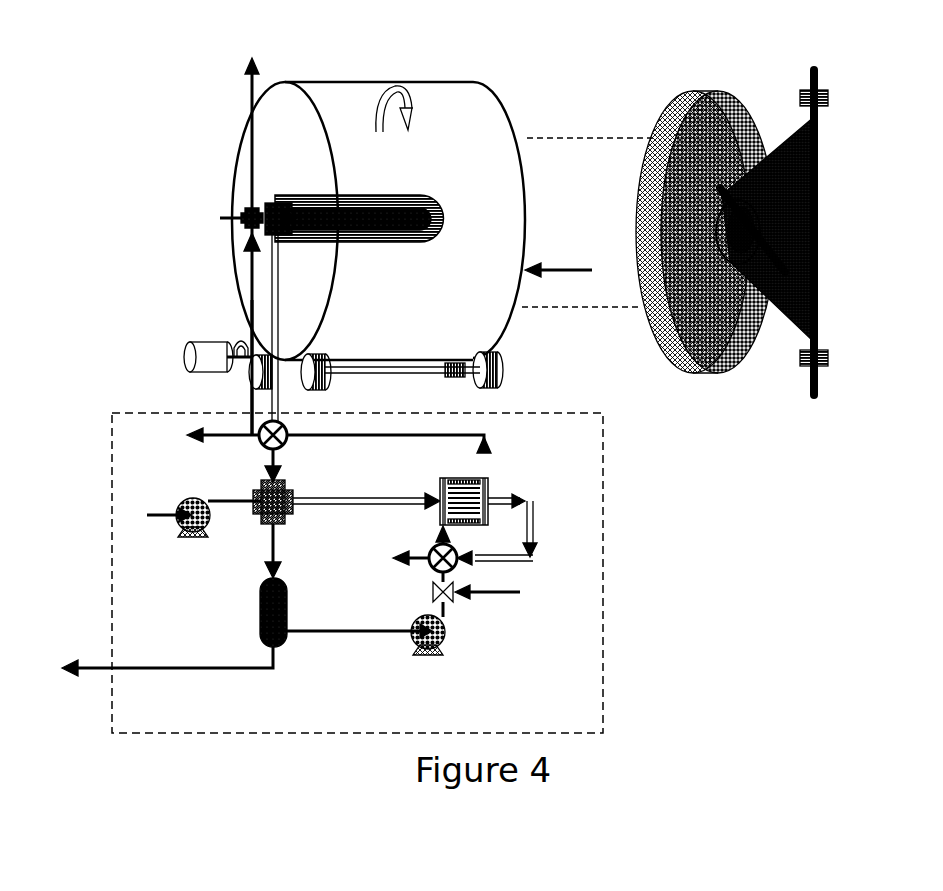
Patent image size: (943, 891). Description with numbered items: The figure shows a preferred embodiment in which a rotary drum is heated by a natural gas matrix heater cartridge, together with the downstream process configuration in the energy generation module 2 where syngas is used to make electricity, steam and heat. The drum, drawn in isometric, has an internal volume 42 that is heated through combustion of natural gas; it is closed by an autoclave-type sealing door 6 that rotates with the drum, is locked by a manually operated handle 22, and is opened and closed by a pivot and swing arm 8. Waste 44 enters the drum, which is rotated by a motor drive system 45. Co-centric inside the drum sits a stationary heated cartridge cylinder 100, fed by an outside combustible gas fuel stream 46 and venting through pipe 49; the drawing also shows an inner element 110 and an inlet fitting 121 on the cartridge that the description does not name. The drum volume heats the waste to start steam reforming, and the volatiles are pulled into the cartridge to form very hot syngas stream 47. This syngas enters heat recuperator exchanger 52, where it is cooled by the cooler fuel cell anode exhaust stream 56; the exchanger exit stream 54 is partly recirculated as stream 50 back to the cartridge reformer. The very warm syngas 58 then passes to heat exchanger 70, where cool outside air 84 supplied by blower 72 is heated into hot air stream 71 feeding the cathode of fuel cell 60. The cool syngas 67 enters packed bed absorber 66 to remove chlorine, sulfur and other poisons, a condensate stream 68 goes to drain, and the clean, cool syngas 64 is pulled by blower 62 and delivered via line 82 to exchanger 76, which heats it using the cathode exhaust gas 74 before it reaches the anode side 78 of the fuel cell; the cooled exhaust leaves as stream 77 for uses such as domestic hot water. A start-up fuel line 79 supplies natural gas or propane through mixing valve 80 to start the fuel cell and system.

The energy generation module 2 is at (604, 500).
The sealing drum door 6 is at (712, 135).
The pivot and swing arm 8 is at (793, 325).
The handle 22 is at (760, 293).
The internal volume 42 is at (475, 140).
The waste 44 is at (560, 270).
The motor drive system 45 is at (210, 340).
The combustible gas fuel stream 46 is at (243, 218).
The syngas stream 47 is at (272, 303).
The pipe 49 is at (250, 97).
The recirculation stream 50 is at (248, 410).
The heat recuperator exchanger 52 is at (290, 430).
The exchanger exit stream 54 is at (218, 432).
The fuel cell anode exhaust stream 56 is at (490, 460).
The very warm syngas 58 is at (268, 453).
The fuel cell 60 is at (490, 492).
The blower 62 is at (435, 657).
The clean, cool syngas 64 is at (335, 648).
The packed bed absorber 66 is at (263, 620).
The cool syngas 67 is at (265, 556).
The condensate stream 68 is at (93, 665).
The heat exchanger 70 is at (292, 516).
The hot air stream 71 is at (318, 498).
The blower 72 is at (185, 538).
The cathode exhaust gas 74 is at (535, 530).
The exchanger 76 is at (433, 567).
The exchanger exit stream 77 is at (398, 556).
The anode side 78 is at (437, 541).
The start-up fuel line 79 is at (508, 592).
The mixing valve 80 is at (449, 597).
The syngas feed line 82 is at (440, 613).
The cool outside air 84 is at (165, 510).
The heated cartridge cylinder 100 is at (402, 195).
The lance nozzle core 110 is at (383, 231).
The lance inlet connector 121 is at (292, 200).